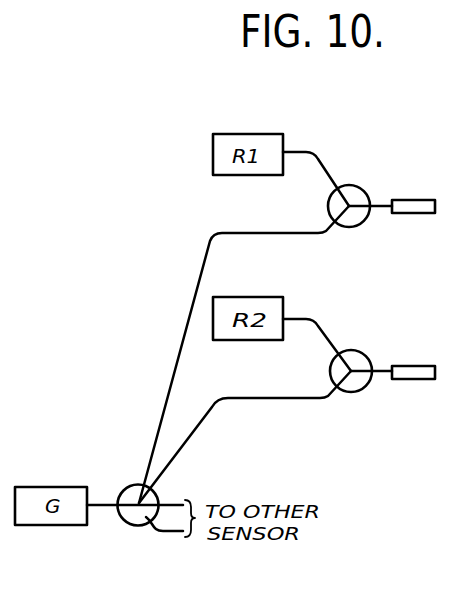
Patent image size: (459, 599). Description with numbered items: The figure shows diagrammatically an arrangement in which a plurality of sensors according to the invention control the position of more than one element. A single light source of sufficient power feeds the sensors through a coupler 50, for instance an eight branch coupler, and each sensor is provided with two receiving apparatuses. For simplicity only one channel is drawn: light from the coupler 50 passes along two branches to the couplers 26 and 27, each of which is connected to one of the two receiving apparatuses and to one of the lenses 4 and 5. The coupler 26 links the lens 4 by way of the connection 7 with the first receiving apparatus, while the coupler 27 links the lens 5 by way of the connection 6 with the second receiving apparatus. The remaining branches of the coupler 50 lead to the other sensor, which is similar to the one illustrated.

The coupler 26 is at (357, 187).
The coupler 27 is at (358, 352).
The lens 4 is at (430, 200).
The lens 5 is at (424, 366).
The optical fiber 6 is at (382, 374).
The optical fiber 7 is at (372, 212).
The coupler 50 is at (137, 526).